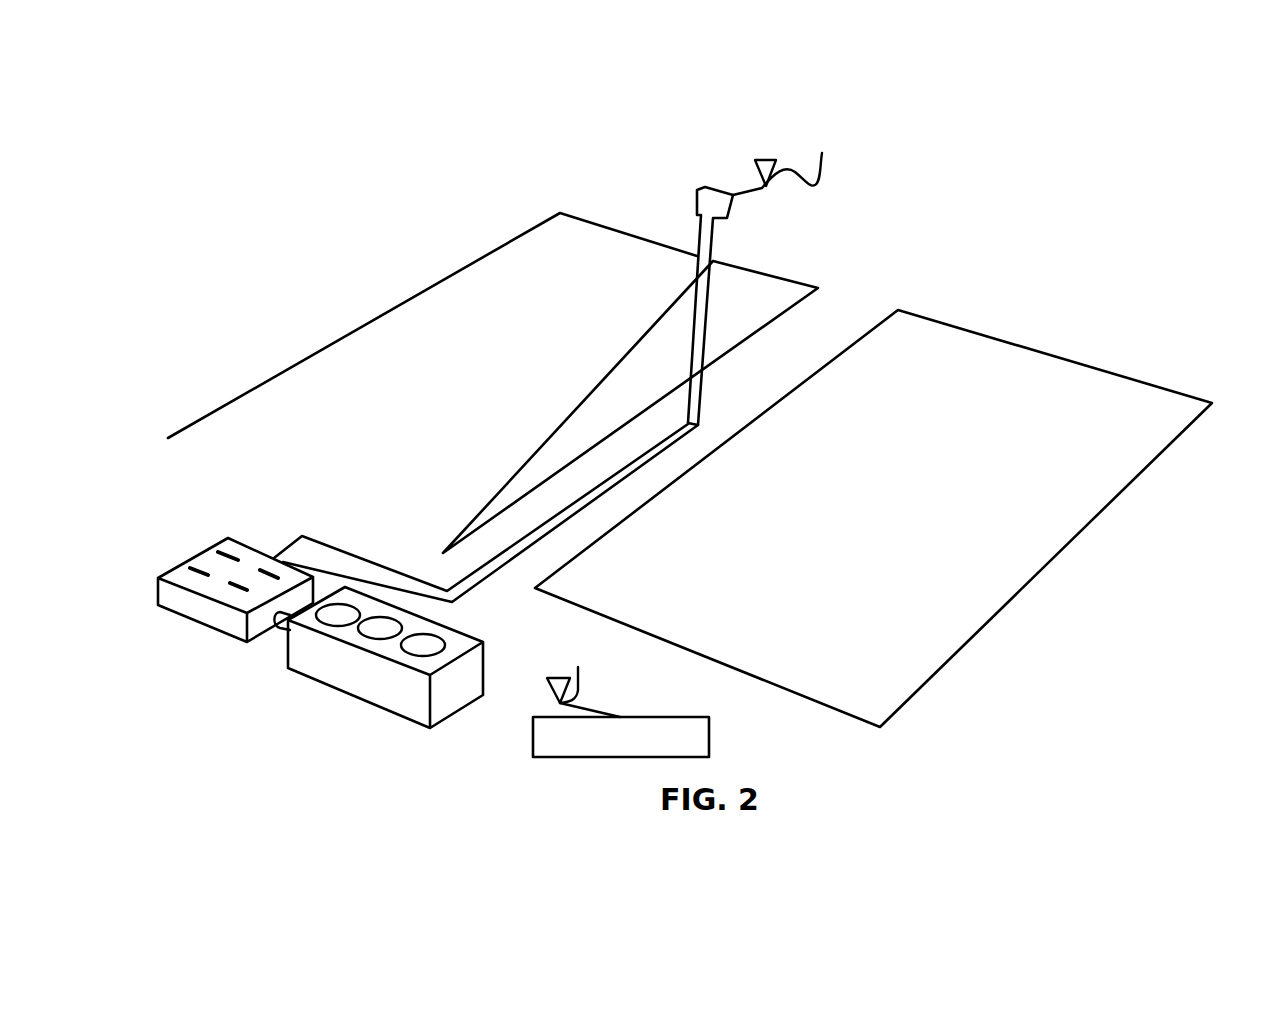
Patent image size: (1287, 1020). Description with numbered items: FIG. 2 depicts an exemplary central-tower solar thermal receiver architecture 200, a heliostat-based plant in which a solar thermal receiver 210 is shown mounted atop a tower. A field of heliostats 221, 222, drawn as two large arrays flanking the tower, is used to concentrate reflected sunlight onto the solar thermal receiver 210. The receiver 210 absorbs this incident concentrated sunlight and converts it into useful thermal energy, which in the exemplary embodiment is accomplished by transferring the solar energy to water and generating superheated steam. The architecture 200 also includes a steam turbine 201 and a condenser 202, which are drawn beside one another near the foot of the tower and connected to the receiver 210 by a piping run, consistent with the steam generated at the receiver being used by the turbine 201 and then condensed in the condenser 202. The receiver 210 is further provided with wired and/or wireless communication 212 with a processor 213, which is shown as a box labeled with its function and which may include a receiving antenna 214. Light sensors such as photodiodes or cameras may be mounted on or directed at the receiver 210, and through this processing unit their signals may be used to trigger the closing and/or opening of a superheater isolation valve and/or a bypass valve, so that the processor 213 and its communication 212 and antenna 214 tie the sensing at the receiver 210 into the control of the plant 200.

The central-tower solar thermal receiver architecture 200 is at (1024, 119).
The steam turbine 201 is at (200, 641).
The condenser 202 is at (357, 716).
The solar thermal receiver 210 is at (693, 190).
The wired and/or wireless communication 212 is at (792, 164).
The processor 213 is at (653, 757).
The receiving antenna 214 is at (588, 690).
The heliostat 221 is at (535, 297).
The heliostat 222 is at (888, 365).